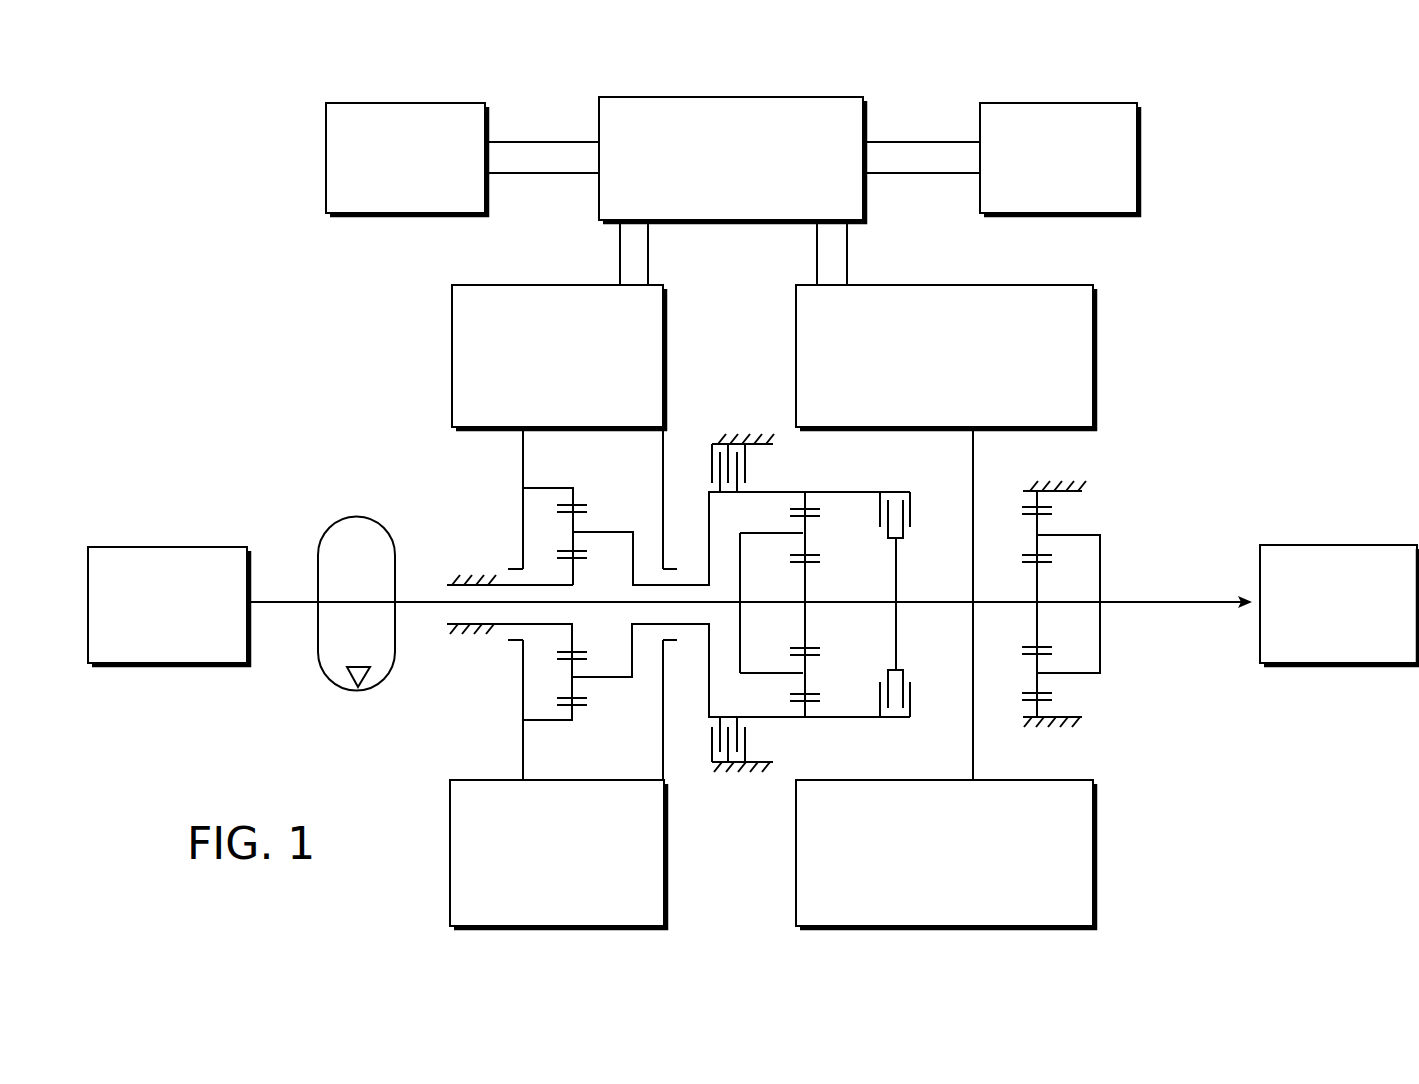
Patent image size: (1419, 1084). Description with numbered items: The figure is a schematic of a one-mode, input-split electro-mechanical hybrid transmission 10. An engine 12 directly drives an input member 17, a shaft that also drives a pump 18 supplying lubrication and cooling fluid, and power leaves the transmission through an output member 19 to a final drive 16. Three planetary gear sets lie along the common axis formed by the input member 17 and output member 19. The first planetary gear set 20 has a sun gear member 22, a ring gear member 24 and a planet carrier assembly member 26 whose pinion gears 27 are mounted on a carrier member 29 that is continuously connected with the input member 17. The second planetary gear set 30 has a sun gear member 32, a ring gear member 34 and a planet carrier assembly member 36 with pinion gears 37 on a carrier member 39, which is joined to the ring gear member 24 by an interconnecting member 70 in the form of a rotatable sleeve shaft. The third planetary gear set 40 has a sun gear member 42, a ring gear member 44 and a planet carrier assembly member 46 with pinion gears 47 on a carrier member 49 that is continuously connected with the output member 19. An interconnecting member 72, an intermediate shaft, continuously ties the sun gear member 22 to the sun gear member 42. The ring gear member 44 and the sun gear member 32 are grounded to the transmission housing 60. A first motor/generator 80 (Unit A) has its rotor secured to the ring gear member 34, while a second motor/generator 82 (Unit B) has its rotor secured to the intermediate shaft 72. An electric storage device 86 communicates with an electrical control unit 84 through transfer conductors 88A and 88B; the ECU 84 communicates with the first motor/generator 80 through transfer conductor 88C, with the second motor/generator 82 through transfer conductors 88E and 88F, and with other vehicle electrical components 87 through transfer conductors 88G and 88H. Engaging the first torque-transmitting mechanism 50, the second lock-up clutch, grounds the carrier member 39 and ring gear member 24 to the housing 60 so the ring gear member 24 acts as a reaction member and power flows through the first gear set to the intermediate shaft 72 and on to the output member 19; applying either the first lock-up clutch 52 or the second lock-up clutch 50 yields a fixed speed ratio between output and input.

The hybrid transmission 10 is at (196, 386).
The engine 12 is at (181, 546).
The final drive 16 is at (1352, 545).
The input member 17 is at (290, 600).
The pump 18 is at (344, 691).
The output member 19 is at (1199, 600).
The first planetary gear set 20 is at (828, 624).
The sun gear member 22 is at (814, 564).
The ring gear member 24 is at (812, 502).
The planet carrier assembly member 26 is at (784, 549).
The pinion gears 27 is at (812, 520).
The carrier member 29 is at (774, 534).
The second planetary gear set 30 is at (590, 626).
The sun gear member 32 is at (567, 564).
The ring gear member 34 is at (575, 503).
The planet carrier assembly member 36 is at (594, 540).
The pinion gears 37 is at (567, 523).
The carrier member 39 is at (603, 530).
The third planetary gear set 40 is at (1058, 622).
The sun gear member 42 is at (1045, 564).
The ring gear member 44 is at (1047, 500).
The planet carrier assembly member 46 is at (1017, 548).
The pinion gears 47 is at (1032, 522).
The carrier member 49 is at (1094, 533).
The first torque-transmitting mechanism 50 is at (760, 470).
The C1 lock-up clutch 52 is at (924, 513).
The transmission housing 60 is at (727, 444).
The interconnecting member 70 is at (695, 584).
The interconnecting member 72 is at (935, 600).
The first motor/generator 80 is at (452, 360).
The second motor/generator 82 is at (1093, 360).
The electrical control unit 84 is at (697, 97).
The electric storage device 86 is at (1067, 103).
The other vehicle electrical components 87 is at (383, 103).
The transfer conductor 88A is at (902, 142).
The transfer conductor 88B is at (943, 173).
The transfer conductor 88C is at (620, 247).
The transfer conductor 88E is at (817, 256).
The transfer conductor 88F is at (847, 245).
The transfer conductor 88G is at (565, 142).
The transfer conductor 88H is at (520, 173).